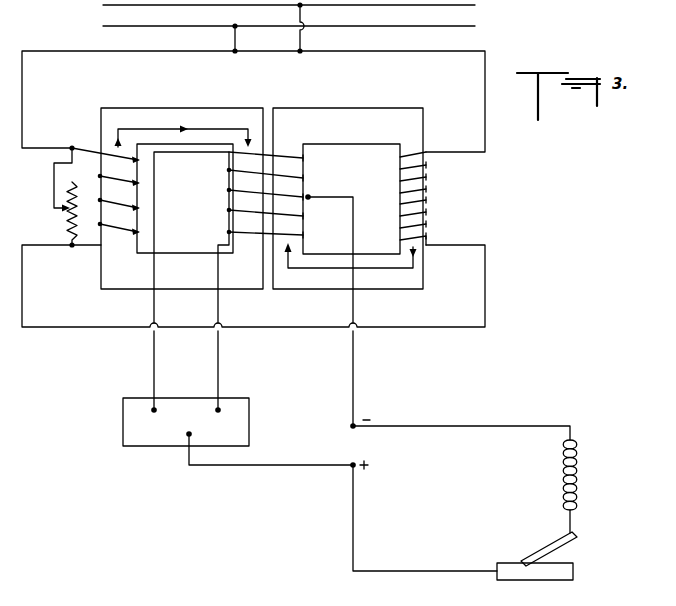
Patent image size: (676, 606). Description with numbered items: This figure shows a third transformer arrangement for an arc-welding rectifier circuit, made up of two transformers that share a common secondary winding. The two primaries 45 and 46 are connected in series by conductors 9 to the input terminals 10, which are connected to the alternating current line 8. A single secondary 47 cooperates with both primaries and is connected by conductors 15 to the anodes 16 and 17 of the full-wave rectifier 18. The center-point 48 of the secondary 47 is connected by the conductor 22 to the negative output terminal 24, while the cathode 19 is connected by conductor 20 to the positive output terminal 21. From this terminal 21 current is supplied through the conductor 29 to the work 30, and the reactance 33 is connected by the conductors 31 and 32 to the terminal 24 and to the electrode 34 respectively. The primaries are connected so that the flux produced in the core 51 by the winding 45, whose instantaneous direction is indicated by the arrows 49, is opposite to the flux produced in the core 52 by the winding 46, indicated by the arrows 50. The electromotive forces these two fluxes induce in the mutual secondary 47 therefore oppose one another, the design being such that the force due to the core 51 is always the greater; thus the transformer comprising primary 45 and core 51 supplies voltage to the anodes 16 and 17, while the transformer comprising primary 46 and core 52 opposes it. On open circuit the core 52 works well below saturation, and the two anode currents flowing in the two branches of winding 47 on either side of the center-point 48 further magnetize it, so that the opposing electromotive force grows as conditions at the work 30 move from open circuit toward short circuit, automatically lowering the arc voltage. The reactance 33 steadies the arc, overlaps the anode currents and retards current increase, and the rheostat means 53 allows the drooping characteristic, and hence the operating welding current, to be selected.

The alternating current line 8 is at (455, 14).
The conductors 9 is at (139, 51).
The input terminals 10 is at (288, 62).
The conductors 15 is at (153, 305).
The anode 16 is at (151, 411).
The anode 17 is at (222, 410).
The full-wave rectifier 18 is at (145, 441).
The cathode 19 is at (188, 436).
The conductor 20 is at (299, 467).
The positive output terminal 21 is at (351, 471).
The conductor 22 is at (355, 378).
The negative output terminal 24 is at (358, 420).
The conductor 29 is at (432, 571).
The work 30 is at (540, 579).
The conductor 31 is at (500, 411).
The conductor 32 is at (575, 522).
The reactance 33 is at (580, 470).
The electrode 34 is at (562, 549).
The primary 45 is at (430, 193).
The primary 46 is at (122, 232).
The secondary 47 is at (291, 152).
The center-point 48 is at (310, 195).
The arrows 49 is at (190, 127).
The arrows 50 is at (372, 270).
The core 51 is at (379, 110).
The core 52 is at (170, 109).
The rheostat means 53 is at (70, 215).